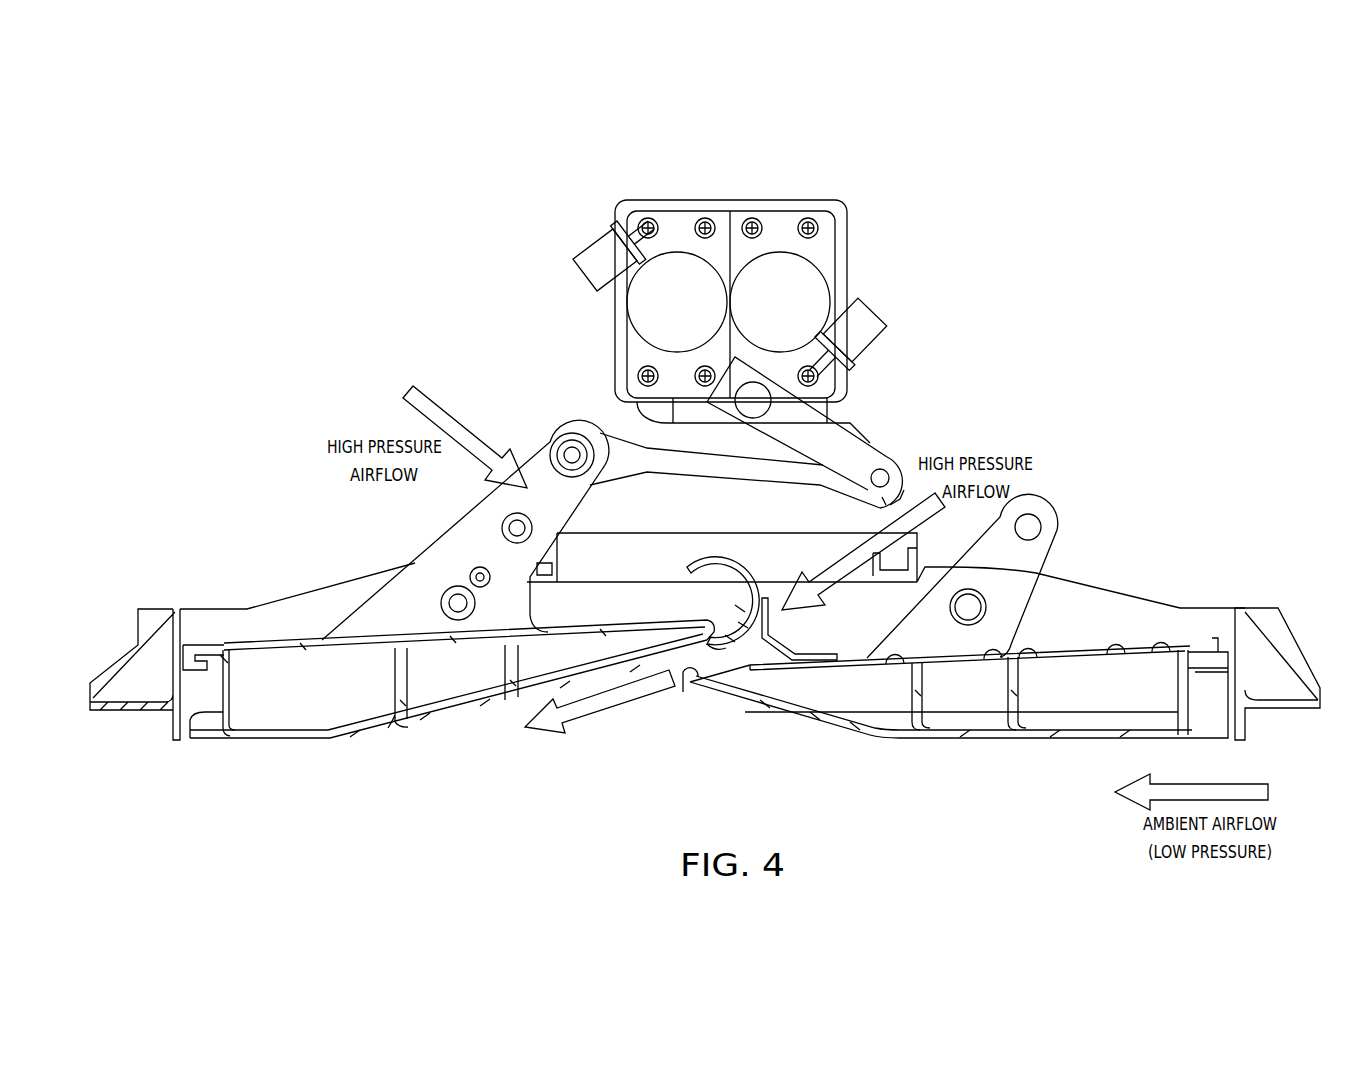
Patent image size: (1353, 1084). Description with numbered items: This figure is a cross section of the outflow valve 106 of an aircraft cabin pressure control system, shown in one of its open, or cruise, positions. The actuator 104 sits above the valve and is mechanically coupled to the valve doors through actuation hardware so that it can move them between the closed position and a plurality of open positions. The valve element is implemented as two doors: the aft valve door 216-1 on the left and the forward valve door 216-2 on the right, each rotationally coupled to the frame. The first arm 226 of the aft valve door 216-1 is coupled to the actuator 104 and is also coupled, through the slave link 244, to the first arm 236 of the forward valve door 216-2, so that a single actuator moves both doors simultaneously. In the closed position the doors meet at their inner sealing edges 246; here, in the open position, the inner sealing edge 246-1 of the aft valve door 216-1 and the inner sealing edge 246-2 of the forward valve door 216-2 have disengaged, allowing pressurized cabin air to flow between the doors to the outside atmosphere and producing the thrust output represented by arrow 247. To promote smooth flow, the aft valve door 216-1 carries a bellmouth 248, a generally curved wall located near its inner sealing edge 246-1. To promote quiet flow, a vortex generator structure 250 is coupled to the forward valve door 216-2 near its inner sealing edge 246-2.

The actuator 104 is at (730, 277).
The outflow valve 106 is at (705, 480).
The first arm 226 is at (465, 530).
The first arm 236 is at (1050, 528).
The slave link 244 is at (725, 462).
The inner sealing edges 246 is at (905, 468).
The inner sealing edge 246-1 is at (722, 652).
The inner sealing edge 246-2 is at (684, 690).
The thrust output arrow 247 is at (622, 716).
The bellmouth 248 is at (742, 566).
The vortex generator structure 250 is at (826, 626).
The aft valve door 216-1 is at (448, 714).
The forward valve door 216-2 is at (959, 729).